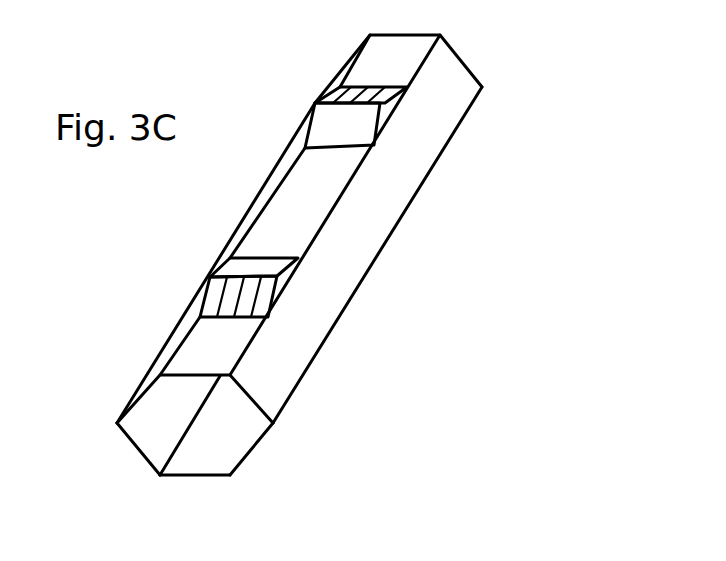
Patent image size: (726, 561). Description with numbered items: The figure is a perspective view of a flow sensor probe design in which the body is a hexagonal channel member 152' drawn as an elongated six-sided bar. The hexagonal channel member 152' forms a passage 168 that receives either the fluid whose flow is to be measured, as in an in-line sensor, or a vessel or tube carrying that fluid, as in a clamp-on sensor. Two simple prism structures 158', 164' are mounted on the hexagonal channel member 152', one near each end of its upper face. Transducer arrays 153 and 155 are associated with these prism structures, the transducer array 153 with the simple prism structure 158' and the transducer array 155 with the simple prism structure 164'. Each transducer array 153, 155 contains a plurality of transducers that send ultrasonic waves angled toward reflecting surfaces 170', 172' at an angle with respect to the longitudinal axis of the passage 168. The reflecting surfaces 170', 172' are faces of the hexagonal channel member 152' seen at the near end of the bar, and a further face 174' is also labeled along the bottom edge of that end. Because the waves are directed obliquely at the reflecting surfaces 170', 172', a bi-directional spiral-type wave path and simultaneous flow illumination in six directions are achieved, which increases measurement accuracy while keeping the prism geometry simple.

The hexagonal channel member 152' is at (334, 229).
The transducer array 155 is at (382, 100).
The simple prism structure 164' is at (435, 152).
The simple prism structure 158' is at (332, 288).
The transducer array 153 is at (232, 293).
The passage 168 is at (222, 423).
The reflecting surface 172' is at (308, 449).
The bottom edge 174' is at (253, 485).
The reflecting surface 170' is at (104, 469).